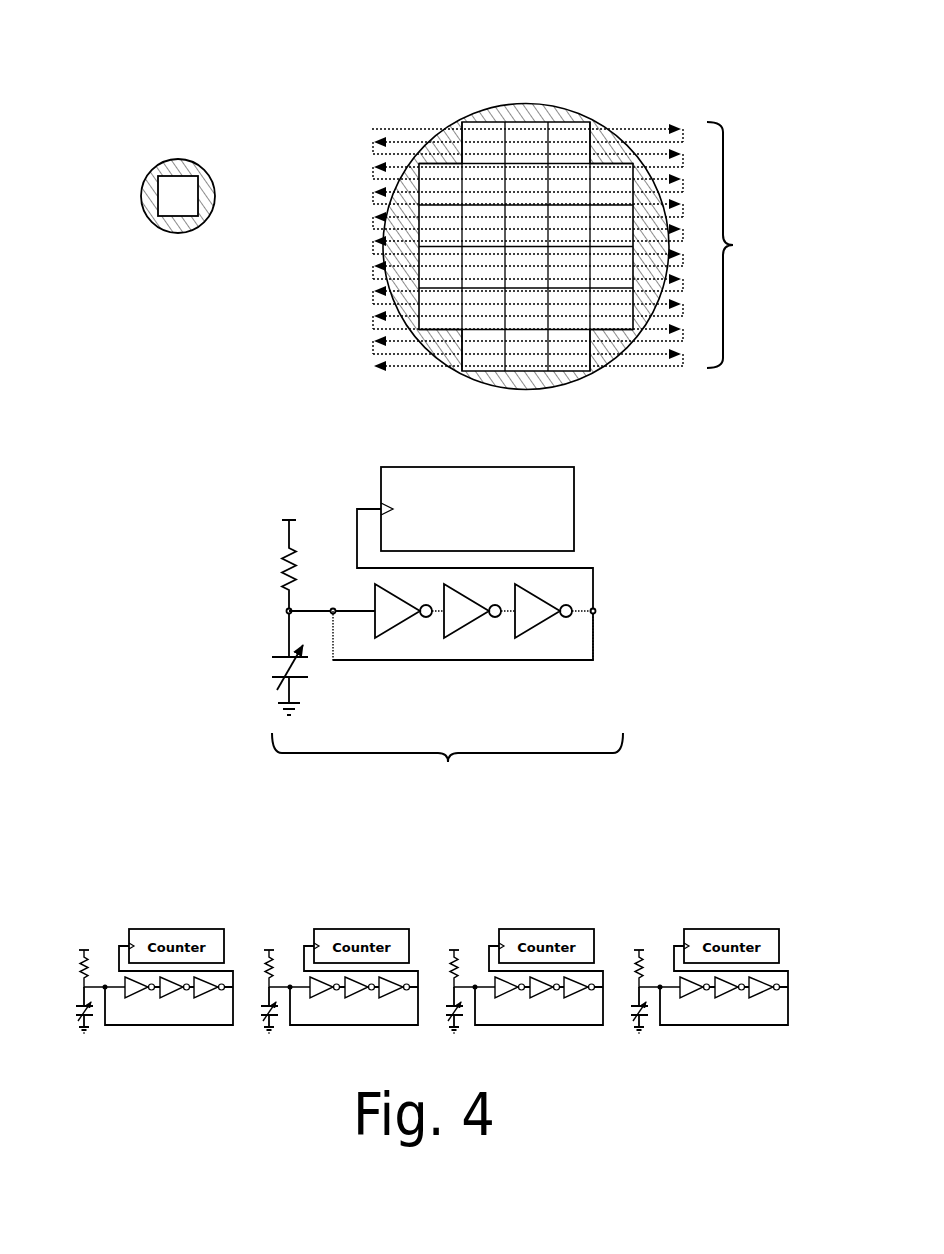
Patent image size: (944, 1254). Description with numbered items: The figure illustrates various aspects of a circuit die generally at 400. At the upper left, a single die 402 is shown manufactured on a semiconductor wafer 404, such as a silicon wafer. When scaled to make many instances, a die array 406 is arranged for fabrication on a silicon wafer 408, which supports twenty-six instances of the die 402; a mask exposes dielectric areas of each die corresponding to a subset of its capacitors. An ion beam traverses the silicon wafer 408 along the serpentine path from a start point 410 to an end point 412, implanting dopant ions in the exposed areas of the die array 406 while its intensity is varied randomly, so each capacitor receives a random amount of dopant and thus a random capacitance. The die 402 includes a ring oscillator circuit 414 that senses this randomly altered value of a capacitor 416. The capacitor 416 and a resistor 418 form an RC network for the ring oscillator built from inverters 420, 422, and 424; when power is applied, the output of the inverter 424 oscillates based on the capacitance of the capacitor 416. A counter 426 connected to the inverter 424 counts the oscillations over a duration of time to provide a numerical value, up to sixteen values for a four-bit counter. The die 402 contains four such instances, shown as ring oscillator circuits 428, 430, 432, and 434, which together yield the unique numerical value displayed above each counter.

The circuit die aspects 400 is at (138, 66).
The die 402 is at (180, 217).
The semiconductor wafer 404 is at (175, 158).
The die array 406 is at (733, 245).
The silicon wafer 408 is at (527, 103).
The start point 410 is at (367, 141).
The end point 412 is at (367, 378).
The ring oscillator circuit 414 is at (446, 762).
The capacitor 416 is at (266, 634).
The resistor 418 is at (266, 549).
The inverter 420 is at (397, 625).
The inverter 422 is at (465, 625).
The inverter 424 is at (537, 625).
The counter 426 is at (451, 467).
The ring oscillator circuit 428 is at (160, 890).
The ring oscillator circuit 430 is at (345, 890).
The ring oscillator circuit 432 is at (530, 890).
The ring oscillator circuit 434 is at (715, 890).